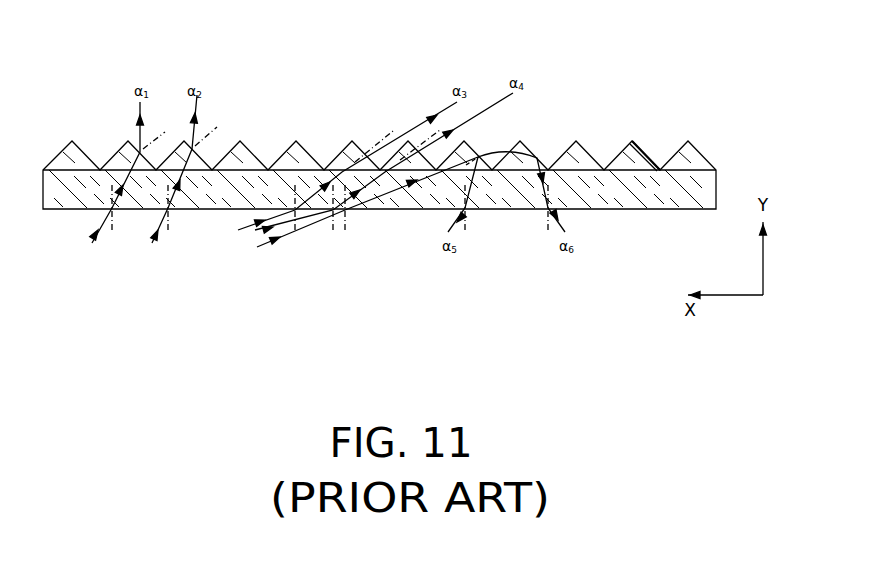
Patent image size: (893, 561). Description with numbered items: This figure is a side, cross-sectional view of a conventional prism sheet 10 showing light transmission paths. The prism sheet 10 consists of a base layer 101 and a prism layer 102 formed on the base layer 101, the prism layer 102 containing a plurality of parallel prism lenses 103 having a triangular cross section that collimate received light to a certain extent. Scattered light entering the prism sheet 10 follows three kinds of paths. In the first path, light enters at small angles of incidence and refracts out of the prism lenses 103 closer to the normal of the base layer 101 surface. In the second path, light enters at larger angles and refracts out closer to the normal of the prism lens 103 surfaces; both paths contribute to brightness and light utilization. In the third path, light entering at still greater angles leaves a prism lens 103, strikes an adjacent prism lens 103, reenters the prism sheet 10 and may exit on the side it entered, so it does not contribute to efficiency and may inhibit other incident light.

The prism sheet 10 is at (411, 171).
The base layer 101 is at (380, 210).
The prism layer 102 is at (637, 155).
The prism lenses 103 is at (703, 155).